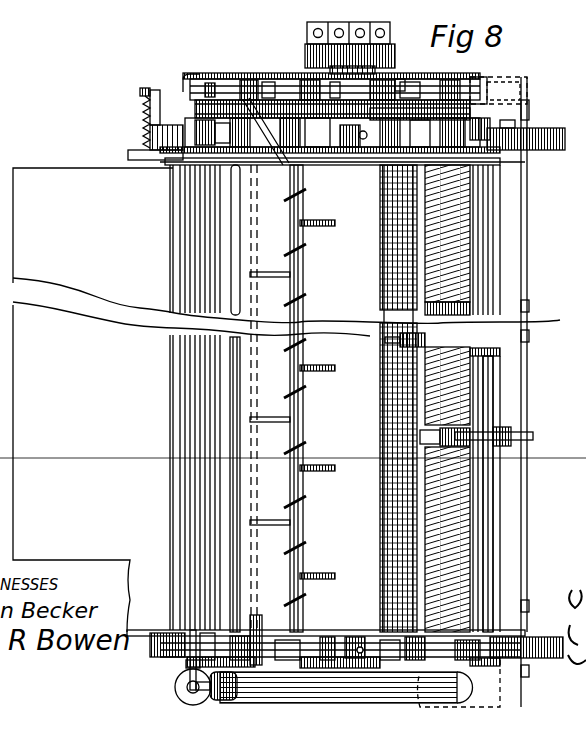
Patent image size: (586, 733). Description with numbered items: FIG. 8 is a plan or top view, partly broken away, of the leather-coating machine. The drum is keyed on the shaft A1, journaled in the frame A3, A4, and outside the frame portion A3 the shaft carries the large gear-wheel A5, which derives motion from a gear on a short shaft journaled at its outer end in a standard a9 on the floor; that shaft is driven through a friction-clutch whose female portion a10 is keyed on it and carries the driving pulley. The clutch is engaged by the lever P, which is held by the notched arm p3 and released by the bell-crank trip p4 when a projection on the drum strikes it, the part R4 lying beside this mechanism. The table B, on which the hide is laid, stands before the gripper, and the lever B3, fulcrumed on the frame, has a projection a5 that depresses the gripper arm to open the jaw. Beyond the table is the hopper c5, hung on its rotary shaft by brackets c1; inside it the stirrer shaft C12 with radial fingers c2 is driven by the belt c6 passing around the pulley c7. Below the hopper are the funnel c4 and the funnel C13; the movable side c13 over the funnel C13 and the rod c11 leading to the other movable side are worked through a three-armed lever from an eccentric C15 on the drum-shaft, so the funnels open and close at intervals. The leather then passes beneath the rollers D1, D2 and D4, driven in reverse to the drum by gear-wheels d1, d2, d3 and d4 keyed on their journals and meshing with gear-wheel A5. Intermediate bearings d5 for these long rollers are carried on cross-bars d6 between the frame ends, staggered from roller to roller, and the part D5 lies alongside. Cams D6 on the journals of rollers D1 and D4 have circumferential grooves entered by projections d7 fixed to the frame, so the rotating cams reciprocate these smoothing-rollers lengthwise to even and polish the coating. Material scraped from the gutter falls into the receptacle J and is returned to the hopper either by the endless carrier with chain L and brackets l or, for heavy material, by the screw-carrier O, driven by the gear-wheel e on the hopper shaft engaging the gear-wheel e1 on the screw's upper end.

The standard a9 is at (312, 22).
The female clutch portion a10 is at (395, 58).
The pulley c7 is at (236, 73).
The belt c6 is at (262, 79).
The brackets l is at (270, 80).
The gear-wheel d1 is at (302, 79).
The hopper c5 is at (250, 174).
The chain L is at (400, 75).
The gear-wheel d2 is at (395, 101).
The gear-wheel A5 is at (428, 112).
The bracket R4 is at (216, 124).
The drum shaft A1 is at (390, 158).
The gripper lever B3 is at (140, 153).
The gear-wheel d4 is at (498, 90).
The gear-wheel d3 is at (478, 87).
The receptacle J is at (533, 392).
The frame portion A3 is at (552, 124).
The table B is at (286, 400).
The lever P is at (143, 92).
The notched arm p3 is at (178, 92).
The trip-lever p4 is at (144, 118).
The funnel C13 is at (235, 228).
The movable side c13 is at (232, 168).
The stirrer shaft C12 is at (304, 282).
The funnel c4 is at (304, 167).
The stirrer fingers c2 is at (320, 227).
The eccentric C15 is at (325, 501).
The smoothing-roller D1 is at (380, 220).
The roller D2 is at (447, 398).
The projection a5 is at (480, 430).
The smoothing-roller D4 is at (497, 210).
The cross-bars d6 is at (503, 372).
The shaft D5 is at (533, 436).
The intermediate bearings d5 is at (430, 437).
The brackets c1 is at (260, 620).
The frame portion A4 is at (545, 637).
The projections d7 is at (505, 662).
The screw-carrier O is at (346, 687).
The cams D6 is at (459, 683).
The gear-wheel e1 is at (185, 690).
The gear-wheel e is at (180, 676).
The rod c11 is at (186, 662).